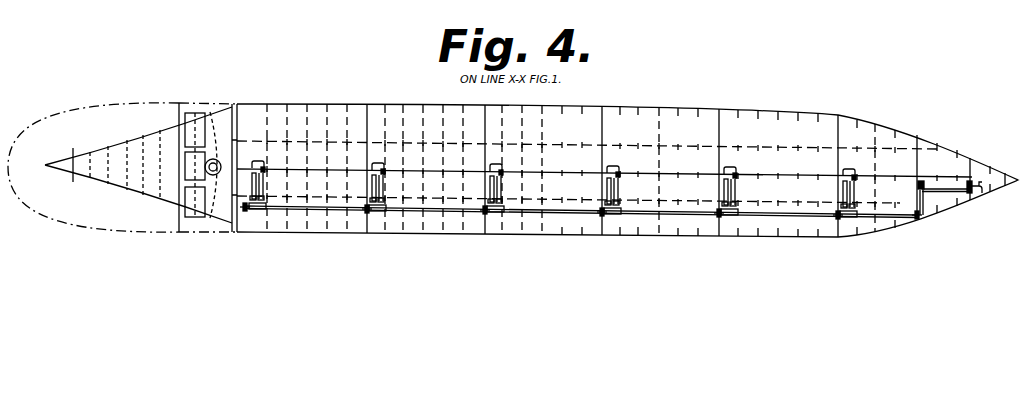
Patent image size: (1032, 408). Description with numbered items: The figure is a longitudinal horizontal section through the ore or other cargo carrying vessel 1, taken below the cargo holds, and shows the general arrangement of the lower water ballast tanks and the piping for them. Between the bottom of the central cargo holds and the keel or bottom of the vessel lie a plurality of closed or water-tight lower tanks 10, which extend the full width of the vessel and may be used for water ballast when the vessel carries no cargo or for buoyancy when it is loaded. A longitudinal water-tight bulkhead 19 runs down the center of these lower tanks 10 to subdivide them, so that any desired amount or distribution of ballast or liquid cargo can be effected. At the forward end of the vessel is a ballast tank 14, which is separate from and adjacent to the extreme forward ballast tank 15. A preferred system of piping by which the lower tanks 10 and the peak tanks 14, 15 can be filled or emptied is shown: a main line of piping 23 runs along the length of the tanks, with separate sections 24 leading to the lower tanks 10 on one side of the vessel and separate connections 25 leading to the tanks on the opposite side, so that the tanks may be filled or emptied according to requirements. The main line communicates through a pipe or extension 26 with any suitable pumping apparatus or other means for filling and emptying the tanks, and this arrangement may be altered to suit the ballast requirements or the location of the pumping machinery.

The ore or other cargo carrying vessel 1 is at (738, 238).
The lower tanks 10 is at (278, 116).
The ballast tank 14 is at (925, 152).
The extreme forward ballast tank 15 is at (975, 167).
The longitudinal water-tight bulkhead 19 is at (339, 166).
The main line of piping 23 is at (283, 211).
The separate sections 24 is at (262, 163).
The separate connections 25 is at (243, 207).
The pipe or extension 26 is at (252, 211).